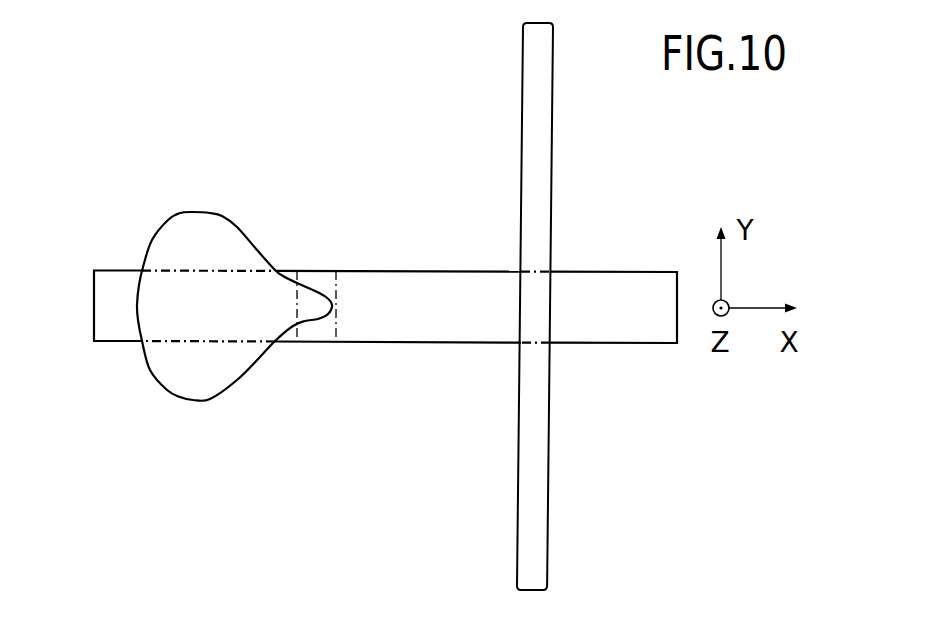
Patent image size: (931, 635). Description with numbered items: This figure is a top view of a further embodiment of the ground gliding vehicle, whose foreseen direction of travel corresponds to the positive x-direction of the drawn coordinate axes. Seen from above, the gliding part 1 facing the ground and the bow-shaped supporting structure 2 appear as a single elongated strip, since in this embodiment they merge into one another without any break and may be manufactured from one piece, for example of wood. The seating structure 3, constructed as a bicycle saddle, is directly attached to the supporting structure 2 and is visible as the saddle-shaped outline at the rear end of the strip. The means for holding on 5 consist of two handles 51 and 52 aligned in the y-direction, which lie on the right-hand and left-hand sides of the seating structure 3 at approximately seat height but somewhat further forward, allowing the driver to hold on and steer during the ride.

The gliding part 1 is at (107, 303).
The supporting structure 2 is at (657, 357).
The seating structure 3 is at (199, 233).
The means for holding on 5 is at (561, 200).
The handle 51 is at (533, 513).
The handle 52 is at (540, 133).